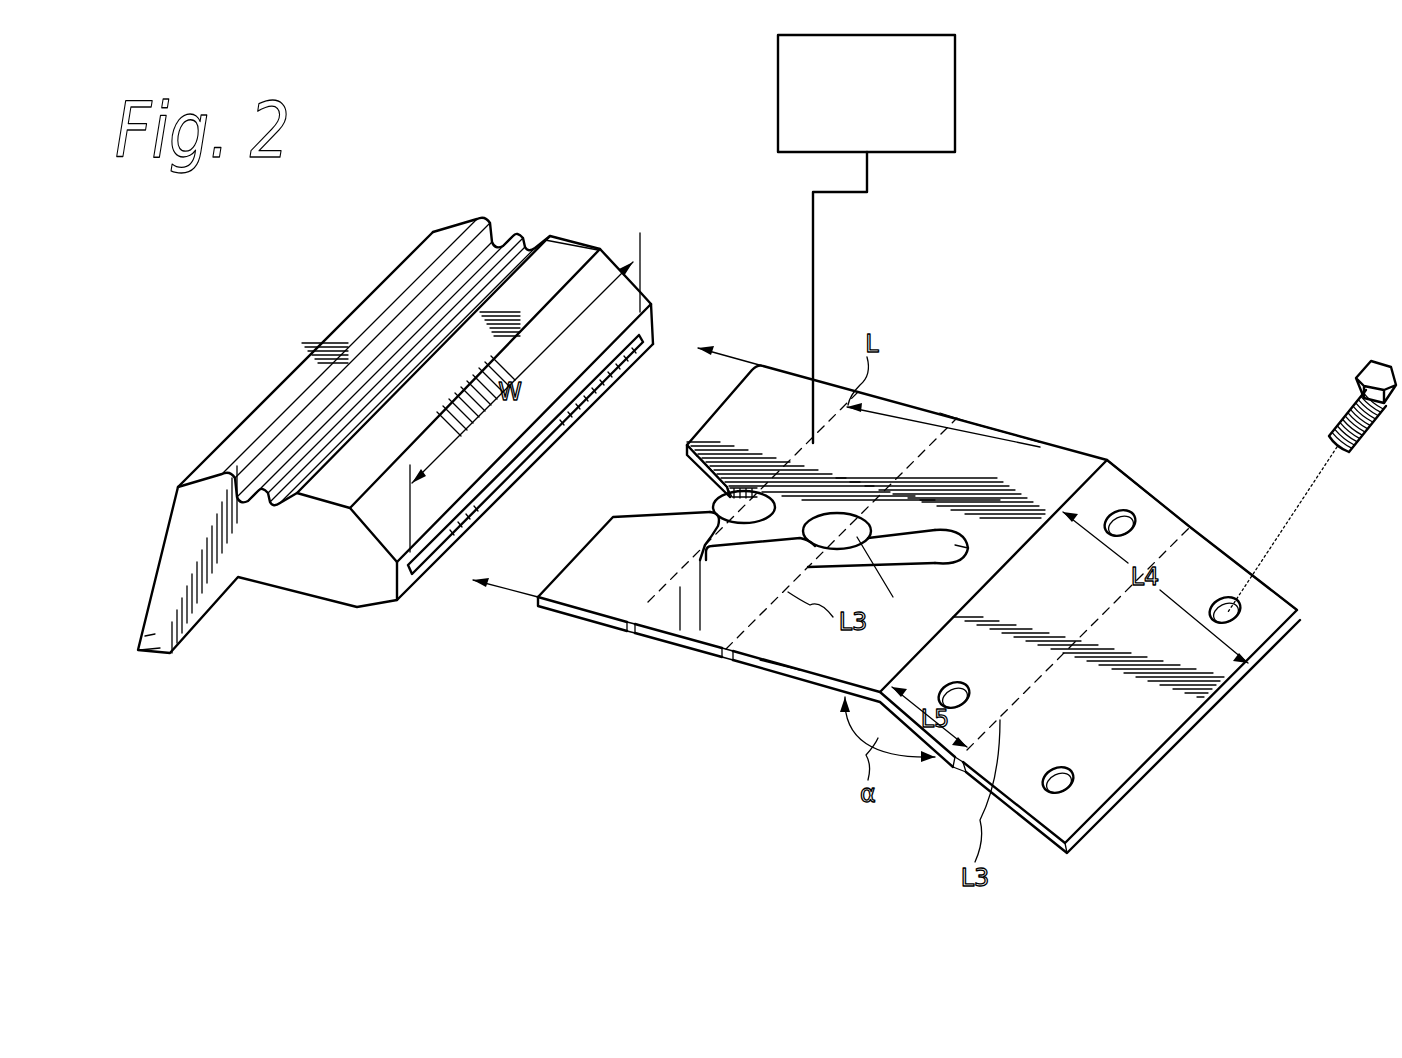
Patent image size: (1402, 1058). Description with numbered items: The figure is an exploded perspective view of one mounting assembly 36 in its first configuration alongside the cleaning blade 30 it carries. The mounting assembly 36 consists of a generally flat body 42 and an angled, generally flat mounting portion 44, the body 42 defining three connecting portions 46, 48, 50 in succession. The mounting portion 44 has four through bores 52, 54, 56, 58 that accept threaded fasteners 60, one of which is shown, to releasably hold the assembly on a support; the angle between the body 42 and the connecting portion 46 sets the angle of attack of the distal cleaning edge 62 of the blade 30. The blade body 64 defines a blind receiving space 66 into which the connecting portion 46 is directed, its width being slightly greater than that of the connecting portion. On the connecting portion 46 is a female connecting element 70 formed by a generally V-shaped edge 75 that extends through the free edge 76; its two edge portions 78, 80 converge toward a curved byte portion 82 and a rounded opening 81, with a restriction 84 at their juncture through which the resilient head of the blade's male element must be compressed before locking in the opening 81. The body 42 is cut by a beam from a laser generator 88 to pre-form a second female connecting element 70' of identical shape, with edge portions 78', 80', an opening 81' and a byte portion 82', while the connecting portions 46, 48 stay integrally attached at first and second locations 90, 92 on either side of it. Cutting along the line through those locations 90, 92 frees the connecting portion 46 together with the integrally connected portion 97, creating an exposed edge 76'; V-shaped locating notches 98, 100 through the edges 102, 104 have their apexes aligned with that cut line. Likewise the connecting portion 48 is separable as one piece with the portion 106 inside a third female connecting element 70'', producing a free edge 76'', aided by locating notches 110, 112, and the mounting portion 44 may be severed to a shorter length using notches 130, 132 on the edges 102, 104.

The cleaning blade 30 is at (292, 580).
The mounting assembly 36 is at (816, 443).
The body 42 is at (843, 662).
The mounting portion 44 is at (1210, 560).
The connecting portion 46 is at (774, 428).
The connecting portion 48 is at (891, 450).
The connecting portion 50 is at (1038, 480).
The through bore 52 is at (1128, 512).
The through bore 54 is at (1237, 622).
The through bore 56 is at (1070, 776).
The through bore 58 is at (963, 690).
The threaded fastener 60 is at (1362, 430).
The distal cleaning edge 62 is at (148, 646).
The body 64 is at (570, 262).
The receiving space 66 is at (580, 395).
The female connecting element 70 is at (653, 499).
The second female connecting element 70' is at (889, 491).
The third female connecting element 70'' is at (1014, 555).
The V-shaped edge 75 is at (687, 447).
The free edge 76 is at (727, 318).
The exposed edge 76' is at (558, 637).
The free edge 76'' is at (1067, 443).
The edge portion 78 is at (606, 550).
The edge portion 78' is at (875, 491).
The edge portion 80 is at (652, 471).
The edge portion 80' is at (671, 536).
The rounded opening 81 is at (762, 403).
The opening 81' is at (918, 545).
The curved byte portion 82 is at (683, 659).
The byte portion 82' is at (893, 581).
The restriction 84 is at (732, 482).
The laser generator 88 is at (854, 141).
The first location 90 is at (950, 417).
The second location 92 is at (680, 600).
The integrally connected portion 97 is at (935, 505).
The locating notch 98 is at (637, 617).
The locating notch 100 is at (857, 390).
The edge 102 is at (780, 672).
The edge 104 is at (960, 412).
The portion 106 is at (968, 560).
The locating notch 110 is at (730, 658).
The locating notch 112 is at (1010, 428).
The notch 130 is at (958, 763).
The notch 132 is at (1195, 525).